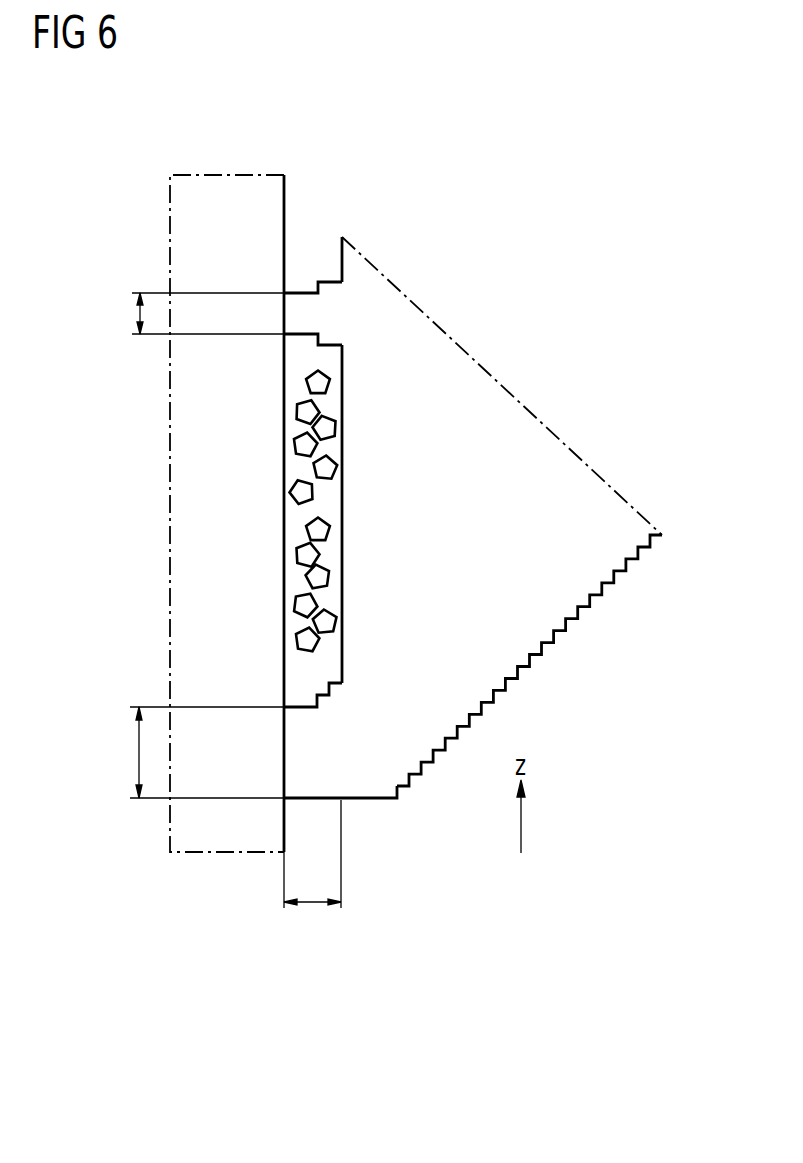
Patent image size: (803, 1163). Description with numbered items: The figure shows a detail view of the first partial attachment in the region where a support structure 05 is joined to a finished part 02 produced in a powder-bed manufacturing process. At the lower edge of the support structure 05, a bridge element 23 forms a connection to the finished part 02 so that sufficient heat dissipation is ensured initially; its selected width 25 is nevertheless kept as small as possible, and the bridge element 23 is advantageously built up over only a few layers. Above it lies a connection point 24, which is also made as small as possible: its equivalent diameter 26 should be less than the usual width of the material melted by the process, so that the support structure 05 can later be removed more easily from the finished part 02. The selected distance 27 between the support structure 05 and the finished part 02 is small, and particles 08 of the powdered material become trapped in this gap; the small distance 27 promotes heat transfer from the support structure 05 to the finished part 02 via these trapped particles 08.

The finished part 02 is at (178, 502).
The support structure 05 is at (466, 376).
The particles 08 is at (298, 404).
The bridge element 23 is at (312, 758).
The connection point 24 is at (302, 302).
The width 25 is at (136, 751).
The equivalent diameter 26 is at (135, 313).
The distance 27 is at (310, 908).